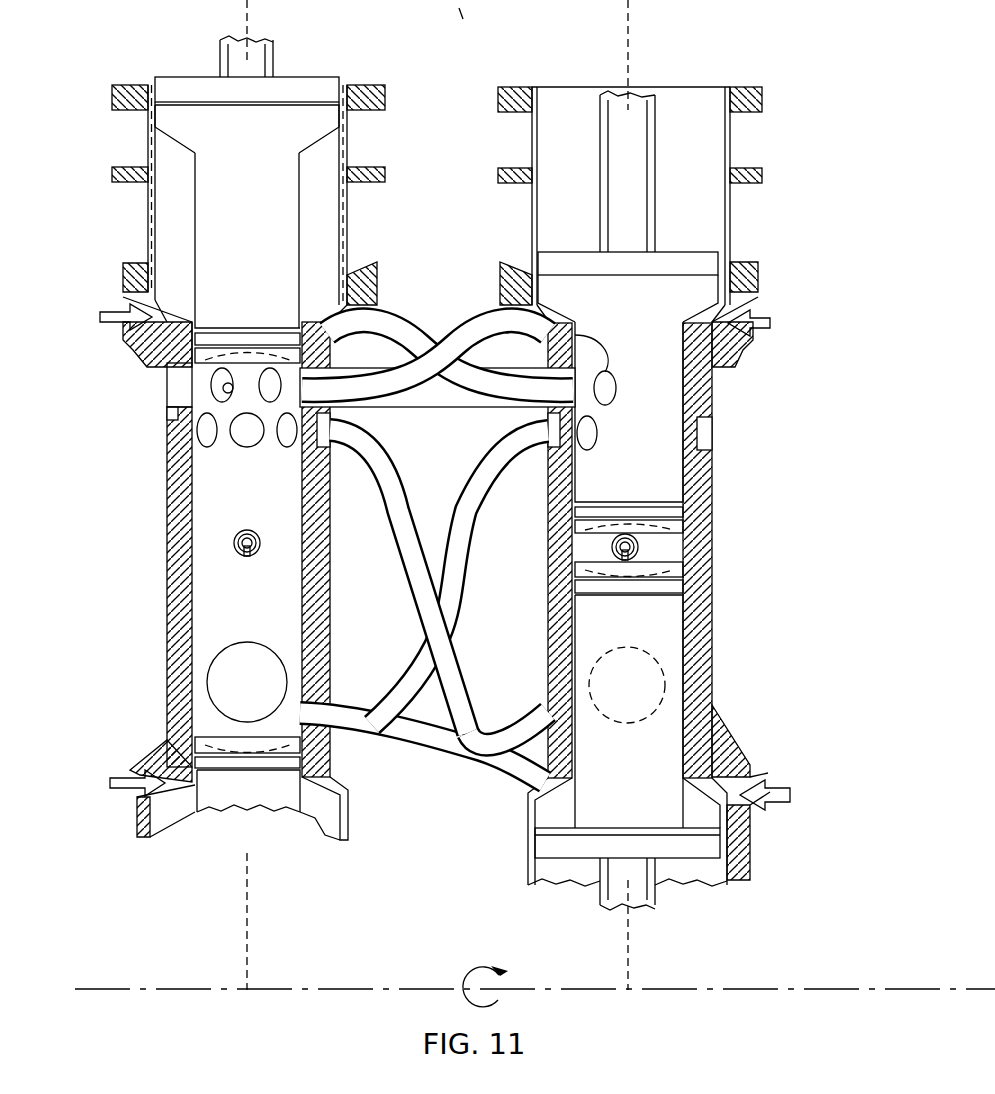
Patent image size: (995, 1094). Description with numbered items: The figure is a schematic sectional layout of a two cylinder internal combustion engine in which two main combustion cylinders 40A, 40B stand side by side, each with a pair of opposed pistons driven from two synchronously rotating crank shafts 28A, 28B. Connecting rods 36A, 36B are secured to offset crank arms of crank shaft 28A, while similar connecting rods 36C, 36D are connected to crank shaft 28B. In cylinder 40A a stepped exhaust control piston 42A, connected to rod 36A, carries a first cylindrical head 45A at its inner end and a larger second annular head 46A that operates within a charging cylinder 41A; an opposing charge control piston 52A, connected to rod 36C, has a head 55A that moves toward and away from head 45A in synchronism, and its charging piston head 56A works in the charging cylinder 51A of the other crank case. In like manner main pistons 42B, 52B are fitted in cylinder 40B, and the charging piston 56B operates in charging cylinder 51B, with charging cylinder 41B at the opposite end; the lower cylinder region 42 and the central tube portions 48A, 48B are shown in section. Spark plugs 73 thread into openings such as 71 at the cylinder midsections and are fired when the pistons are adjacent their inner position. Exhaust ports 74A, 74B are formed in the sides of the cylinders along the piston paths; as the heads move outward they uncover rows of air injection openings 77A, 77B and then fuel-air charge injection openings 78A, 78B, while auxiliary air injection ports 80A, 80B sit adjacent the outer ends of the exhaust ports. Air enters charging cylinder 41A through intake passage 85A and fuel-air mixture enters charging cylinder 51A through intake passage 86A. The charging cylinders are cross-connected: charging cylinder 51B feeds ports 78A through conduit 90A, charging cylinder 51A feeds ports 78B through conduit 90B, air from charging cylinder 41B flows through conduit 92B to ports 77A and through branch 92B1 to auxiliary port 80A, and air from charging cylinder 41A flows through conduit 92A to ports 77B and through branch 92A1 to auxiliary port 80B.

The crank shaft 28A is at (405, 988).
The crank shaft 28B is at (543, 495).
The connecting rod 36A is at (628, 877).
The connecting rod 36B is at (247, 945).
The connecting rod 36C is at (655, 125).
The connecting rod 36D is at (273, 50).
The main combustion cylinder 40A is at (712, 460).
The main combustion cylinder 40B is at (167, 516).
The charging cylinder 41A is at (545, 870).
The charging cylinder 41B is at (318, 800).
The lower cylinder 42 is at (705, 858).
The stepped exhaust control piston 42A is at (604, 622).
The exhaust control piston 42B is at (245, 815).
The first cylindrical head 45A is at (686, 565).
The second annular head 46A is at (700, 848).
The cylinder wall 48A is at (705, 560).
The cylinder wall 48B is at (180, 562).
The charging cylinder 51A is at (730, 215).
The charging cylinder 51B is at (168, 230).
The charge control piston 52A is at (579, 493).
The charge control piston 52B is at (225, 262).
The piston head 55A is at (638, 522).
The charging piston head 56A is at (700, 297).
The charging piston 56B is at (197, 122).
The spark plug 71 is at (642, 555).
The spark plug 73 is at (243, 543).
The exhaust port 74A is at (680, 672).
The exhaust port 74B is at (247, 645).
The air injection openings 77A is at (590, 433).
The air injection openings 77B is at (245, 438).
The fuel-air charge injection openings 78A is at (615, 398).
The fuel-air charge injection openings 78B is at (246, 475).
The auxiliary air injection port 80A is at (590, 725).
The auxiliary air injection port 80B is at (241, 686).
The intake passage 85A is at (760, 772).
The intake passage 86A is at (755, 320).
The conduit 90A is at (440, 383).
The conduit 90B is at (477, 318).
The conduit 92A is at (469, 676).
The branch 92A1 is at (360, 710).
The conduit 92B is at (465, 500).
The branch 92B1 is at (537, 710).